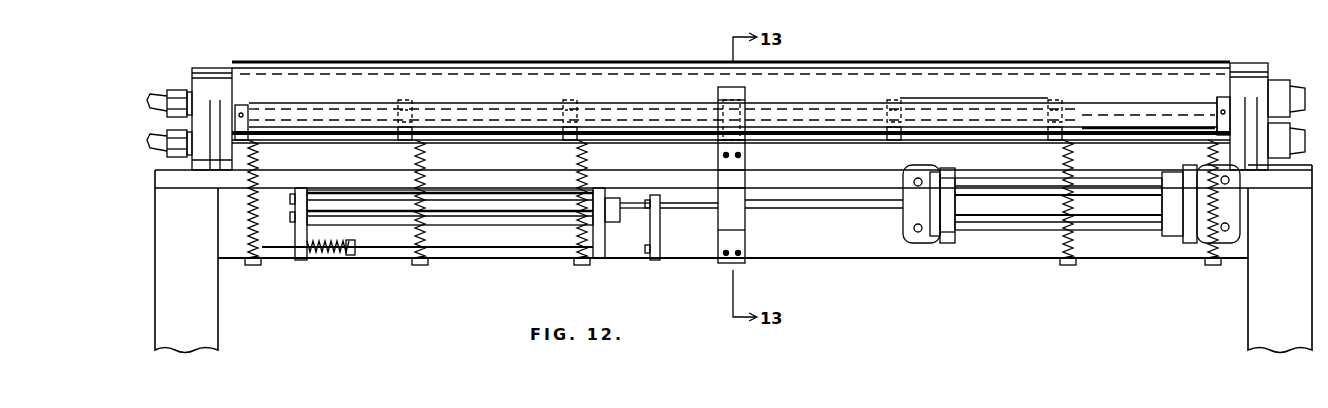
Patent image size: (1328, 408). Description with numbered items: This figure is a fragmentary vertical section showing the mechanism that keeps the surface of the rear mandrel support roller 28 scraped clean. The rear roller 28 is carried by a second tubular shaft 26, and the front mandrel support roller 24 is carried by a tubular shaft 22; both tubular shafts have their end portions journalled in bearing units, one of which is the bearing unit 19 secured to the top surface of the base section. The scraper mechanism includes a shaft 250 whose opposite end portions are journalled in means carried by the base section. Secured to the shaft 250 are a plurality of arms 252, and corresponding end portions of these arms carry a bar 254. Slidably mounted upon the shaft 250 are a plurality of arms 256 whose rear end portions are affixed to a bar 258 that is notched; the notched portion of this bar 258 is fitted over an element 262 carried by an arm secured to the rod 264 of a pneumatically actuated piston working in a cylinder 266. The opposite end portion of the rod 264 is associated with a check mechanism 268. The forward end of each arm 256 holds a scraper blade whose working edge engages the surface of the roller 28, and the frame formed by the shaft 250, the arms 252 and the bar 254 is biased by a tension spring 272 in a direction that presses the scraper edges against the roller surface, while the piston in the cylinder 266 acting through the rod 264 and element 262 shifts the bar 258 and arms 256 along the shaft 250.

The bearing unit 19 is at (1255, 65).
The tubular shaft 22 is at (150, 150).
The front mandrel support roller 24 is at (232, 157).
The second tubular shaft 26 is at (150, 95).
The rear mandrel support roller 28 is at (232, 90).
The shaft 250 is at (1190, 108).
The arms 252 is at (398, 138).
The bar 254 is at (1142, 125).
The arms 256 is at (270, 108).
The bar 258 is at (988, 106).
The element 262 is at (740, 90).
The rod 264 is at (655, 210).
The cylinder 266 is at (515, 210).
The check mechanism 268 is at (1110, 225).
The tension spring 272 is at (258, 156).